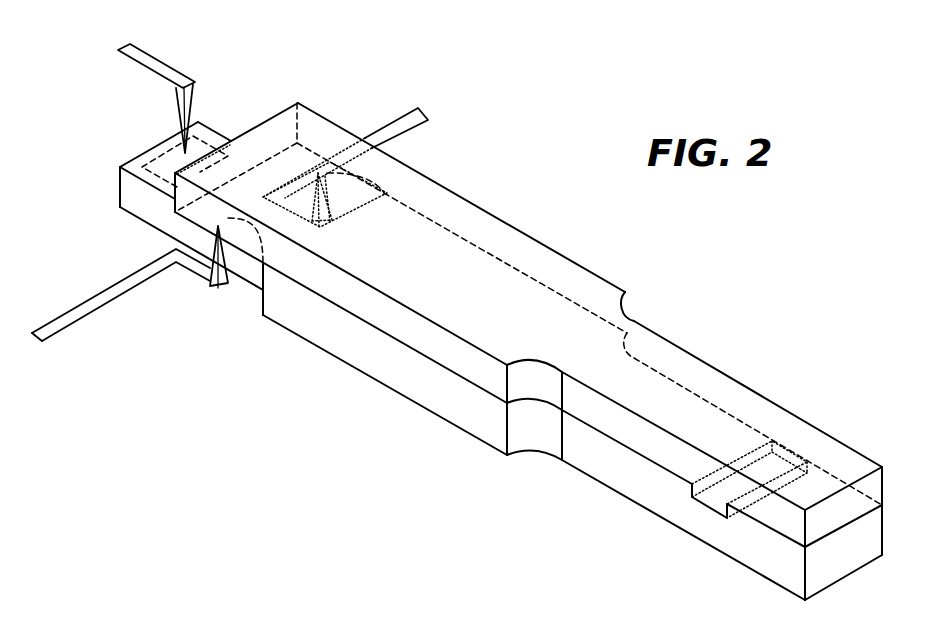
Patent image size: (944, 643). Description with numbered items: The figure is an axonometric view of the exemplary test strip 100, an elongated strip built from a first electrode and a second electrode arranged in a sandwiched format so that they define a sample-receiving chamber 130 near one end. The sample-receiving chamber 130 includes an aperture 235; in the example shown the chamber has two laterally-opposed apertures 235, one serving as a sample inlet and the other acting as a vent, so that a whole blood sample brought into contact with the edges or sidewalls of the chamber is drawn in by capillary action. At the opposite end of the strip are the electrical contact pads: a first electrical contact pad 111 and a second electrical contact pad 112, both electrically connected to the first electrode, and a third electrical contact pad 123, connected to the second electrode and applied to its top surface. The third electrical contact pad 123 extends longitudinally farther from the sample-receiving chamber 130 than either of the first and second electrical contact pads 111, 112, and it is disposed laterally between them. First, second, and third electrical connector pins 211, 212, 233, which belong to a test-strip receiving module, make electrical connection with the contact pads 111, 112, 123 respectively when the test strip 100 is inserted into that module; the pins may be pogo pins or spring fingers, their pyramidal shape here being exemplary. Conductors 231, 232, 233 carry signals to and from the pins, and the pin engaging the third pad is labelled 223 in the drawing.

The test strip 100 is at (793, 336).
The first electrical contact pad 111 is at (240, 238).
The second electrical contact pad 112 is at (307, 160).
The third electrical contact pad 123 is at (152, 160).
The sample-receiving chamber 130 is at (692, 516).
The aperture 235 is at (797, 452).
The first electrical connector pin 211 is at (208, 286).
The second electrical connector pin 212 is at (325, 228).
The third probe needle 223 is at (197, 95).
The conductor 231 is at (98, 309).
The conductor 232 is at (398, 133).
The third electrical connector pin 233 is at (148, 52).